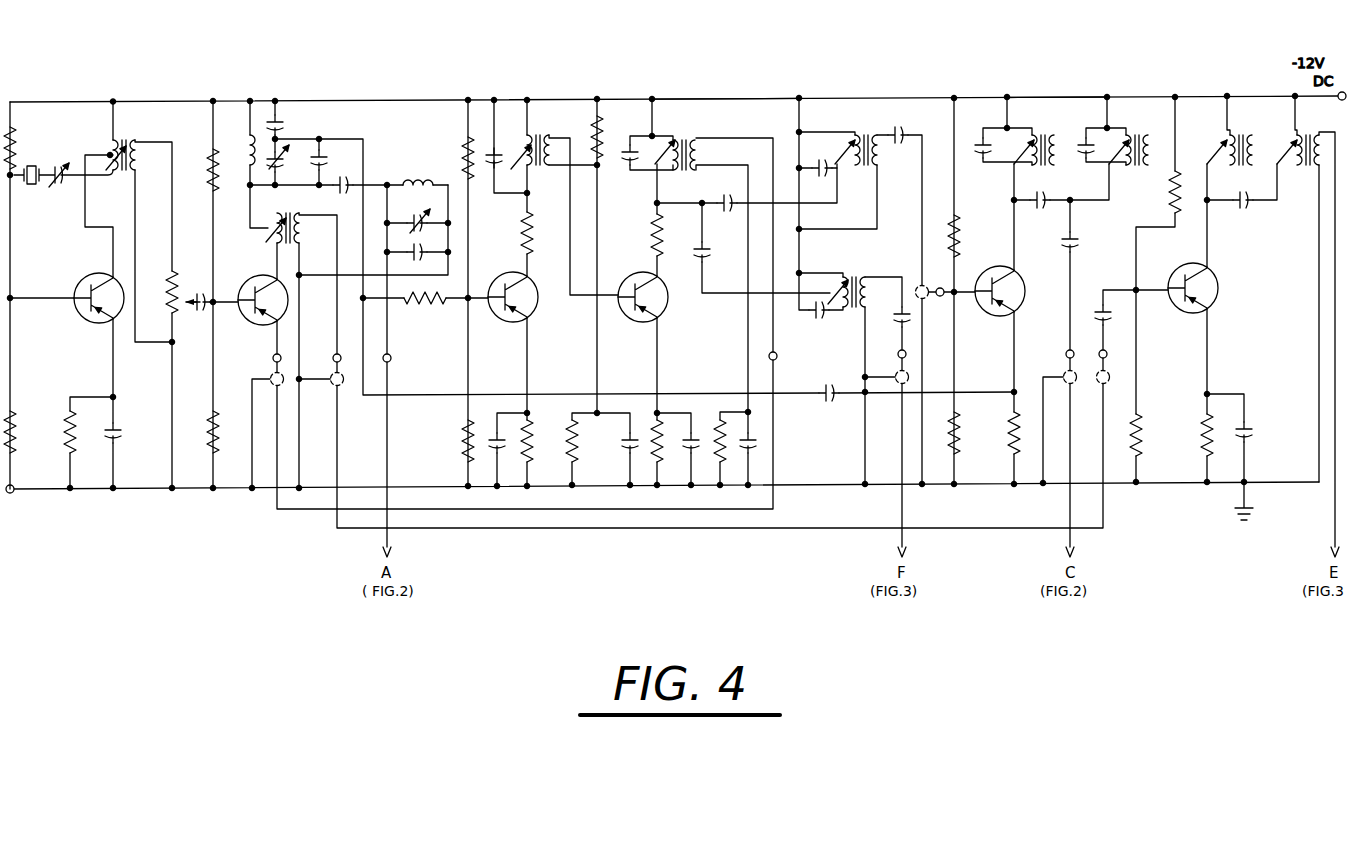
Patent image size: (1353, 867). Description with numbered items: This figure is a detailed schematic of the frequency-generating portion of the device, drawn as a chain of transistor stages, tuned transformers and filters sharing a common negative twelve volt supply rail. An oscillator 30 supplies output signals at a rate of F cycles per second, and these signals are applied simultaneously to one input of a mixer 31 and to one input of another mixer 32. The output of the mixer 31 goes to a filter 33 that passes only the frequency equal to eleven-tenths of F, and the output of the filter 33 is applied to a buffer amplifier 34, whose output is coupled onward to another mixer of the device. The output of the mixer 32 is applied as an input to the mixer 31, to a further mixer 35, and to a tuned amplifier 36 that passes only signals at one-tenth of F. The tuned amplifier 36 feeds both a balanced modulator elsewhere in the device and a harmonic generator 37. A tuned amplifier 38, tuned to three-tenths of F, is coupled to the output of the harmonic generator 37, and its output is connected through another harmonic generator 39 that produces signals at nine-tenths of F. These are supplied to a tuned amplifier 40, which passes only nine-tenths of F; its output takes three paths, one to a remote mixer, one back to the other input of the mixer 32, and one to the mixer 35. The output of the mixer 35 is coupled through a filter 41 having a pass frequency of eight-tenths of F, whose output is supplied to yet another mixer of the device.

The oscillator 30 is at (52, 161).
The mixer 31 is at (247, 234).
The mixer 32 is at (237, 283).
The filter 33 is at (311, 226).
The buffer amplifier 34 is at (1246, 277).
The mixer 35 is at (979, 266).
The tuned amplifier 36 is at (346, 133).
The harmonic generator 37 is at (497, 273).
The tuned amplifier 38 is at (518, 96).
The harmonic generator 39 is at (623, 273).
The tuned amplifier 40 is at (716, 94).
The filter 41 is at (1079, 80).